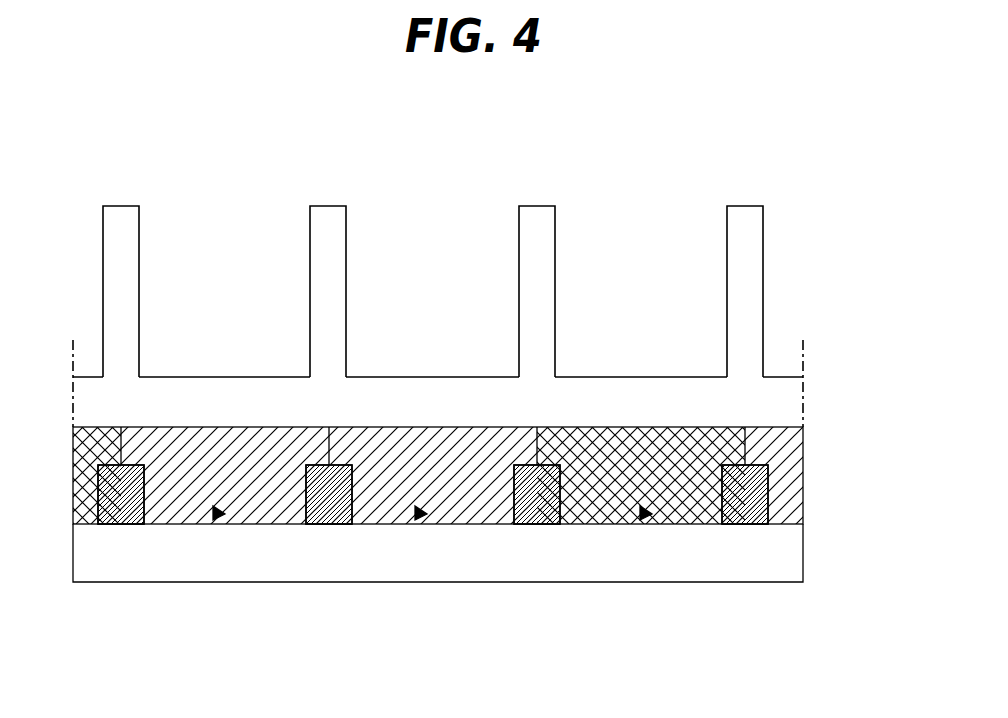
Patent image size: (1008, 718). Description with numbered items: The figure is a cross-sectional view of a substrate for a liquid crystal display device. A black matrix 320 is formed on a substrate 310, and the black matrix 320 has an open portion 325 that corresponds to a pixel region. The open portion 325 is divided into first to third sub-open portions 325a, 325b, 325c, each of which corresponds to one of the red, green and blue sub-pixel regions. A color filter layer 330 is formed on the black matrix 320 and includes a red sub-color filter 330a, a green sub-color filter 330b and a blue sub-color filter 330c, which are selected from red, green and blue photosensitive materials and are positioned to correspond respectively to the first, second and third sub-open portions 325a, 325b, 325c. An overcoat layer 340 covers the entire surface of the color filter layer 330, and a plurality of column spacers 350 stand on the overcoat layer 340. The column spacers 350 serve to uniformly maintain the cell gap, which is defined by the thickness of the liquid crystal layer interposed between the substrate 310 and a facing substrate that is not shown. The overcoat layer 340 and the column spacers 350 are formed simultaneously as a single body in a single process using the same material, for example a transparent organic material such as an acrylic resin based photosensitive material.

The substrate 310 is at (497, 568).
The black matrix 320 is at (770, 503).
The open portion 325 is at (215, 640).
The first sub-open portion 325a is at (222, 524).
The second sub-open portion 325b is at (424, 524).
The third sub-open portion 325c is at (649, 524).
The color filter layer 330 is at (630, 330).
The red sub-color filter 330a is at (223, 437).
The green sub-color filter 330b is at (432, 437).
The blue sub-color filter 330c is at (637, 437).
The overcoat layer 340 is at (790, 401).
The column spacers 350 is at (538, 210).